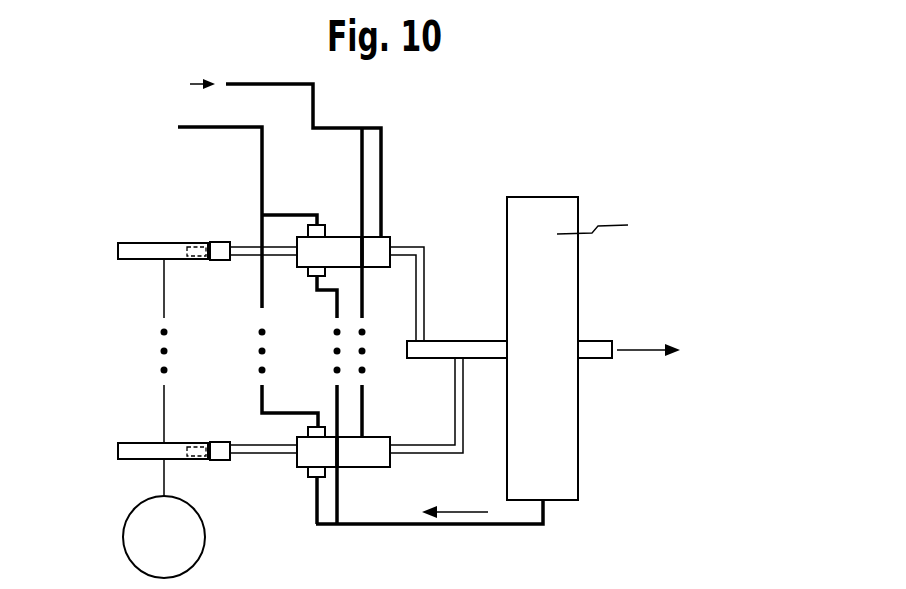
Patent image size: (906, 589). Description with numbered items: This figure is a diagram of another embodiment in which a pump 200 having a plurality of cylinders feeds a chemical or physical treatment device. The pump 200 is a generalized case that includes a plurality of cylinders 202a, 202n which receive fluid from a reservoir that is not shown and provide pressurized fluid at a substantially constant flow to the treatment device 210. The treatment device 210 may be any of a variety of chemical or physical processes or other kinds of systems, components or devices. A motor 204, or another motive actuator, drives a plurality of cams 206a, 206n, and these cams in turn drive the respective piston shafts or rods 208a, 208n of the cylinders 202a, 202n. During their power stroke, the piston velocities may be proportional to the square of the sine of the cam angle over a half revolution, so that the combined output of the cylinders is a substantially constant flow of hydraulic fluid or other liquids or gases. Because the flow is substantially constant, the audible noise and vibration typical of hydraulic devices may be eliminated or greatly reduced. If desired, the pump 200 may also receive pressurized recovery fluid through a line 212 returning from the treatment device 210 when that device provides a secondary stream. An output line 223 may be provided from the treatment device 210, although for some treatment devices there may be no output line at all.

The pump 200 is at (134, 352).
The cylinder 202a is at (390, 237).
The cylinder 202n is at (374, 468).
The motor 204 is at (129, 517).
The cam 206a is at (118, 248).
The cam 206n is at (118, 448).
The piston shaft 208a is at (249, 246).
The piston shaft 208n is at (252, 455).
The treatment device 210 is at (570, 461).
The line 212 is at (531, 527).
The output line 223 is at (596, 338).